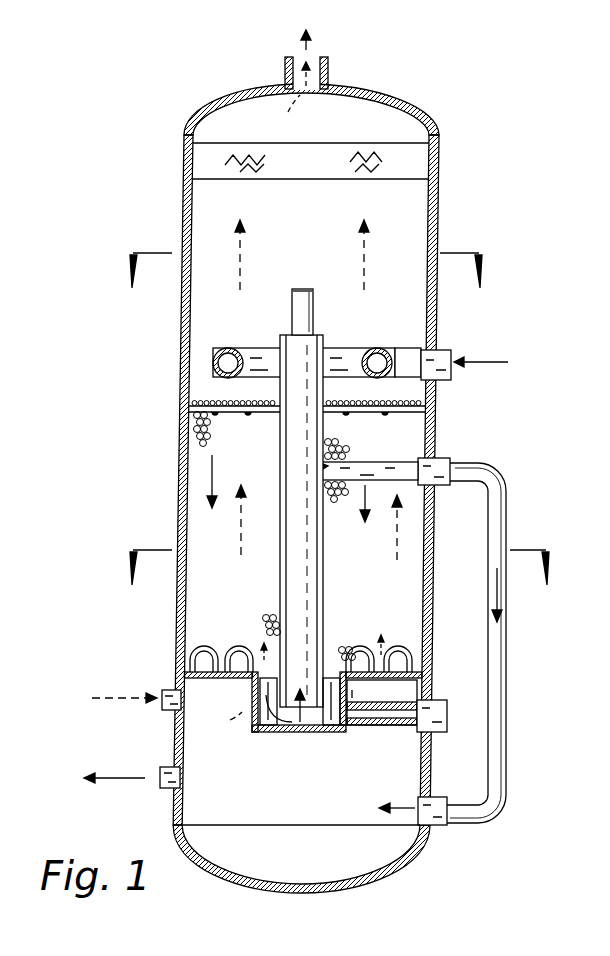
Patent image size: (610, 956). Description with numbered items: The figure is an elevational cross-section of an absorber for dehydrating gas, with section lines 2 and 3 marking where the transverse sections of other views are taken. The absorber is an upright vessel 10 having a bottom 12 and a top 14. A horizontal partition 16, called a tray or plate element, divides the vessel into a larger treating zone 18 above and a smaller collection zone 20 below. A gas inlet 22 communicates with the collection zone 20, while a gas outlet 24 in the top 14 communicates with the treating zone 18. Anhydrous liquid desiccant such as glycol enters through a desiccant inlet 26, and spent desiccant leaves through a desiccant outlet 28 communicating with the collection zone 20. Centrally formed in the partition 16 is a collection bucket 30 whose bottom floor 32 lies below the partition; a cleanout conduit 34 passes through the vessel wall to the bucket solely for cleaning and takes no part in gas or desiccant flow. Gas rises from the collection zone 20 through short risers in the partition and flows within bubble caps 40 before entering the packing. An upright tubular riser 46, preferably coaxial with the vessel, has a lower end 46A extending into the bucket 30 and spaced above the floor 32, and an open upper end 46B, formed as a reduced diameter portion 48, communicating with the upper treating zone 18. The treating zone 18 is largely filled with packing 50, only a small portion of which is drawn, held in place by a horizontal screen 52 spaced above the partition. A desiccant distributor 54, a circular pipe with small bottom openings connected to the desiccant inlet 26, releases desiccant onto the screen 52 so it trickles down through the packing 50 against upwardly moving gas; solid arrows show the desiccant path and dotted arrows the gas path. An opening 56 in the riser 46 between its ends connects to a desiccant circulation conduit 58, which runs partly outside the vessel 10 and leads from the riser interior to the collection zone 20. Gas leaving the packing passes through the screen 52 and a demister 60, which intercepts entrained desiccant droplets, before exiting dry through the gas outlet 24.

The section line 2- 2 is at (334, 574).
The section line 3- 3 is at (305, 271).
The vessel 10 is at (437, 196).
The bottom 12 is at (312, 893).
The top 14 is at (400, 106).
The horizontal partition 16 is at (405, 662).
The treating zone 18 is at (312, 233).
The collection zone 20 is at (312, 818).
The gas inlet 22 is at (172, 690).
The gas outlet 24 is at (330, 70).
The desiccant inlet 26 is at (445, 354).
The desiccant outlet 28 is at (168, 790).
The collection bucket 30 is at (256, 700).
The bottom floor 32 is at (275, 735).
The cleanout conduit 34 is at (381, 730).
The bubble caps 40 is at (248, 655).
The tubular riser 46 is at (325, 612).
The lower end 46A is at (304, 712).
The upper end 46B is at (303, 288).
The reduced diameter portion 48 is at (314, 318).
The packing 50 is at (340, 457).
The screen 52 is at (195, 405).
The desiccant distributor 54 is at (268, 348).
The opening 56 is at (340, 484).
The desiccant circulation conduit 58 is at (428, 467).
The demister 60 is at (405, 143).